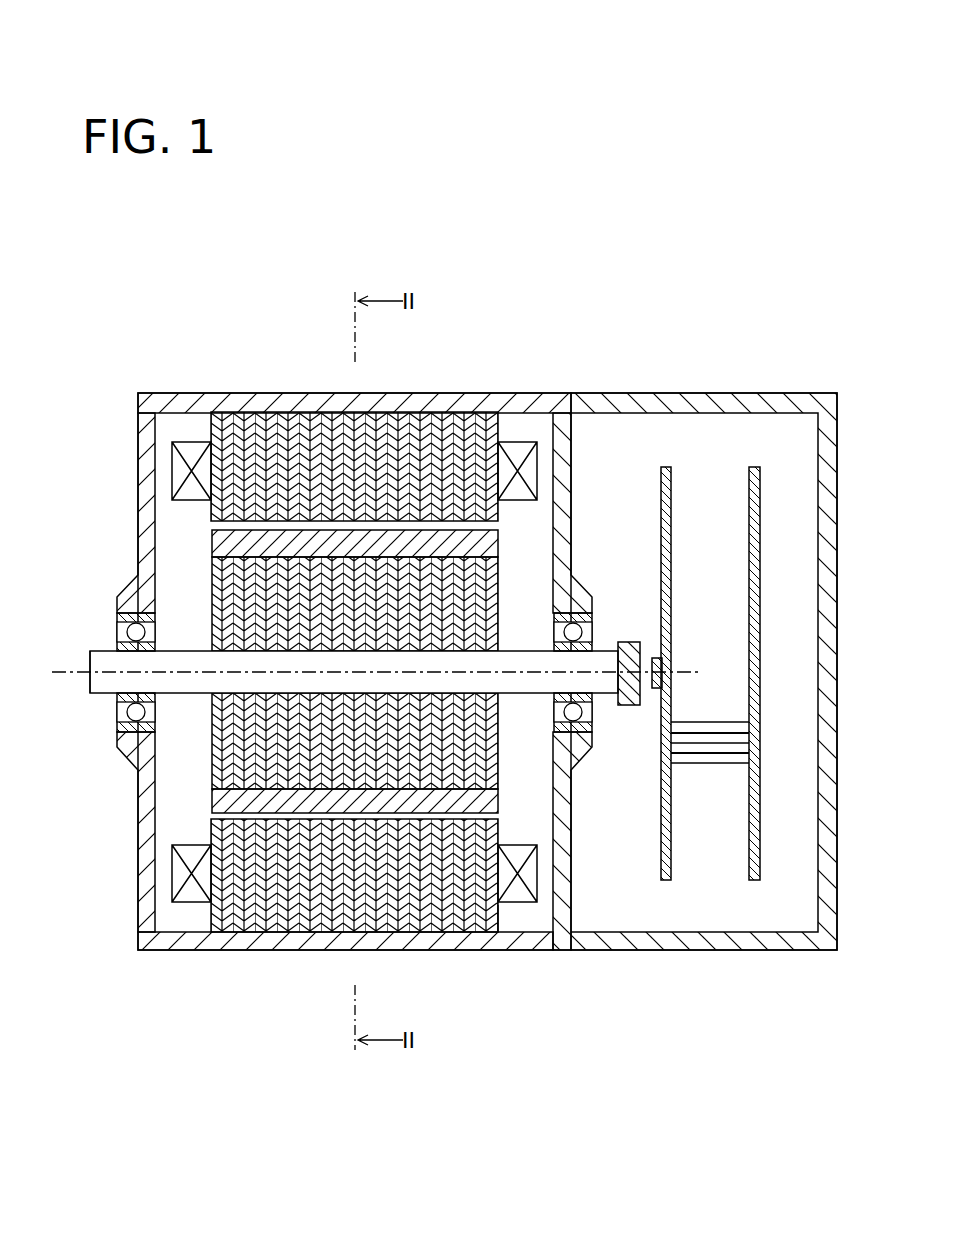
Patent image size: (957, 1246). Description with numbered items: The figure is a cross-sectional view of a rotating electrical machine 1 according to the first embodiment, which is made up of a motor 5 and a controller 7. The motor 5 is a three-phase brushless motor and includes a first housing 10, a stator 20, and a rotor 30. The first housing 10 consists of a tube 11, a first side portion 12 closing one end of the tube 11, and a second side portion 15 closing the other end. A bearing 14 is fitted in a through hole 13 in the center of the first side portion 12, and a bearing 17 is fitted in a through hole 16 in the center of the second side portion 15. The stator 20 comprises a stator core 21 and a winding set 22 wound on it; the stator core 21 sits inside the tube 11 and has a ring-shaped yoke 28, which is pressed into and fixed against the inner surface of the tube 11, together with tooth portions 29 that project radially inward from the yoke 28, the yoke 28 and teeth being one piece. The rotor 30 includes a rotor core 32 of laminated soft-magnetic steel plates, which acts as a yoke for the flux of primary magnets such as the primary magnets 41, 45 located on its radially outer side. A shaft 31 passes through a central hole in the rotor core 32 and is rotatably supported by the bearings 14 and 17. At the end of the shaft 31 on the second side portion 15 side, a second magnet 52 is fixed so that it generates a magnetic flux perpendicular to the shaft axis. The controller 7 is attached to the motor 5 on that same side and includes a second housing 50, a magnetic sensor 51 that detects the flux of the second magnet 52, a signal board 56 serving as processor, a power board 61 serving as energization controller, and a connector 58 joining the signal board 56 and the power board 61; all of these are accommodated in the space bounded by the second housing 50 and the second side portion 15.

The rotating electrical machine 1 is at (279, 320).
The motor 5 is at (514, 932).
The controller 7 is at (777, 864).
The first housing 10 is at (205, 378).
The tube 11 is at (521, 406).
The first side portion 12 is at (147, 868).
The through hole 13 is at (121, 630).
The bearing 14 is at (121, 712).
The second side portion 15 is at (566, 820).
The through hole 16 is at (589, 626).
The bearing 17 is at (586, 735).
The stator 20 is at (553, 461).
The stator core 21 is at (88, 430).
The winding set 22 is at (530, 475).
The yoke 28 is at (213, 426).
The tooth portions 29 is at (213, 511).
The rotor 30 is at (516, 590).
The shaft 31 is at (606, 682).
The rotor core 32 is at (213, 745).
The primary magnet 41 is at (228, 544).
The primary magnet 45 is at (235, 797).
The second housing 50 is at (768, 395).
The magnetic sensor 51 is at (657, 668).
The second magnet 52 is at (633, 650).
The signal board 56 is at (668, 563).
The connector 58 is at (695, 757).
The power board 61 is at (757, 564).